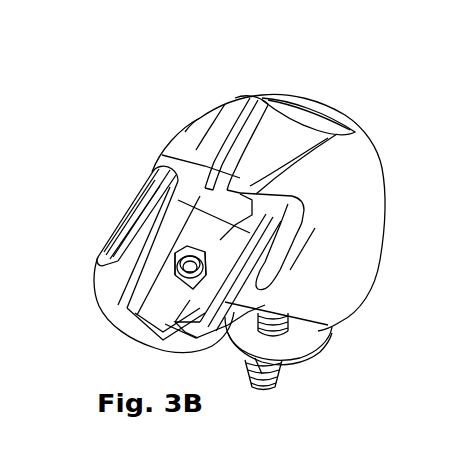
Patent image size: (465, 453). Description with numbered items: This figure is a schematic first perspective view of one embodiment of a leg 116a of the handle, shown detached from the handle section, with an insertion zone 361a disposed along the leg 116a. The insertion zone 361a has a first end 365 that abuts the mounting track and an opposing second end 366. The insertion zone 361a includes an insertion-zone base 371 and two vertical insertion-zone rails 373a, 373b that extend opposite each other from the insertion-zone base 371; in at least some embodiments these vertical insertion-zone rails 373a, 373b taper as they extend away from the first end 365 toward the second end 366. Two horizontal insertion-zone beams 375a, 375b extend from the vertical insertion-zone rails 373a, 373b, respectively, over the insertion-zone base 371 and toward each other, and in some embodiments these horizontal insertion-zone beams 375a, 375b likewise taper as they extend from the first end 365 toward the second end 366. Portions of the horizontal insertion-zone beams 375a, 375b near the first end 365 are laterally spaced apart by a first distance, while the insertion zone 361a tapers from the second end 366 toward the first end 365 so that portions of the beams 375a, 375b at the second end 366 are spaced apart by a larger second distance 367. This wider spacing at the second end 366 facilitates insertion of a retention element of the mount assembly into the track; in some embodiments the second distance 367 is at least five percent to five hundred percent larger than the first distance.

The leg 116a is at (391, 100).
The insertion zone 361a is at (230, 63).
The first end 365 is at (129, 142).
The second end 366 is at (194, 85).
The second distance 367 is at (334, 133).
The insertion-zone base 371 is at (270, 130).
The vertical insertion-zone rail 373a is at (235, 138).
The vertical insertion-zone rail 373b is at (337, 200).
The horizontal insertion-zone beam 375a is at (188, 158).
The horizontal insertion-zone beam 375b is at (277, 203).